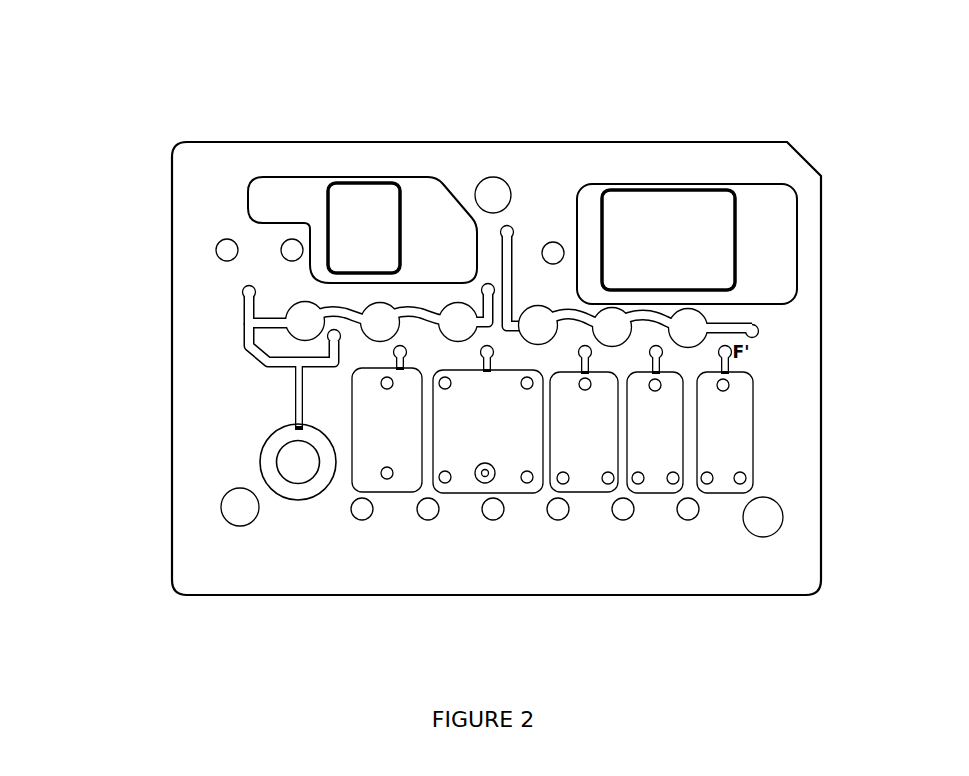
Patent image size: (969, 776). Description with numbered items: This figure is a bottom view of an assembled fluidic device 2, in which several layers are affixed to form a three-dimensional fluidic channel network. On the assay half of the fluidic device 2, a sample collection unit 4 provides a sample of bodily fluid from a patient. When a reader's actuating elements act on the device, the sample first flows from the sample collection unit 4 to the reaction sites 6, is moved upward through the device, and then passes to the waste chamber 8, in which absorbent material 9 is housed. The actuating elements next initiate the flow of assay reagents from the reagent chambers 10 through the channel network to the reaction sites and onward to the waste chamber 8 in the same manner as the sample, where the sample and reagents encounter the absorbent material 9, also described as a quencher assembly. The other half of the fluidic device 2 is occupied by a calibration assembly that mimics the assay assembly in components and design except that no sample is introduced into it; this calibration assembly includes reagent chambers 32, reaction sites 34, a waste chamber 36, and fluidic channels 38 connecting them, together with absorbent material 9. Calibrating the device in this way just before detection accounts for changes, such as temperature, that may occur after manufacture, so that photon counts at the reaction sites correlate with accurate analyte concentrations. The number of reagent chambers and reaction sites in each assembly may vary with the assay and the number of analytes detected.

The fluidic device 2 is at (128, 260).
The sample collection unit 4 is at (298, 500).
The reaction sites 6 is at (305, 302).
The waste chamber 8 is at (733, 185).
The absorbent material 9 is at (337, 208).
The reagent chambers 10 is at (585, 493).
The reagent chambers 32 is at (655, 493).
The reaction sites 34 is at (688, 310).
The waste chamber 36 is at (292, 177).
The fluidic channels 38 is at (513, 252).